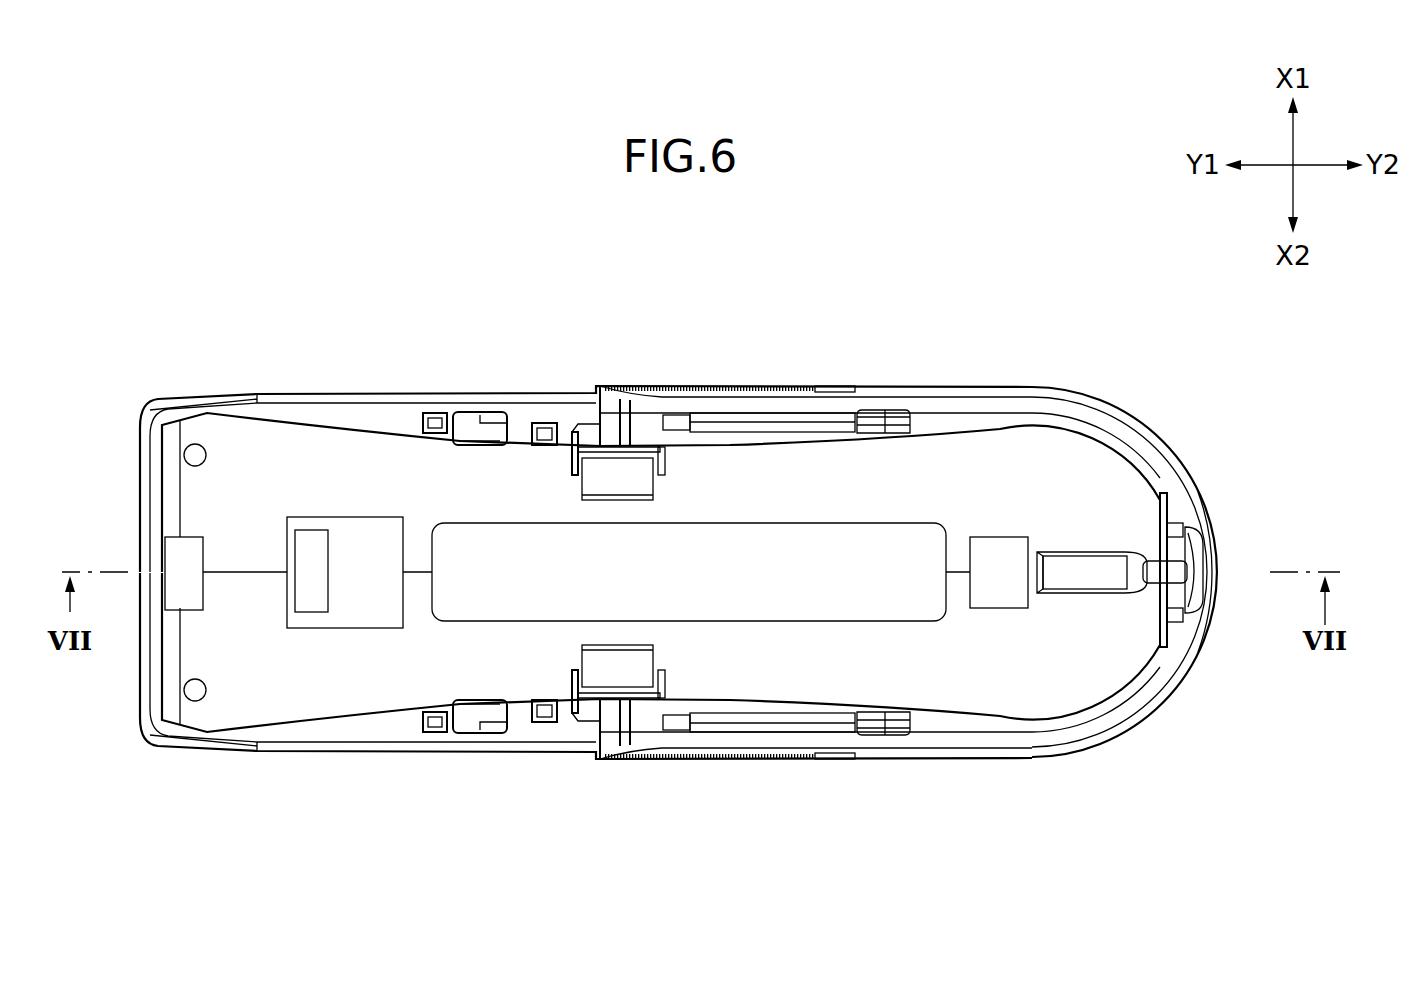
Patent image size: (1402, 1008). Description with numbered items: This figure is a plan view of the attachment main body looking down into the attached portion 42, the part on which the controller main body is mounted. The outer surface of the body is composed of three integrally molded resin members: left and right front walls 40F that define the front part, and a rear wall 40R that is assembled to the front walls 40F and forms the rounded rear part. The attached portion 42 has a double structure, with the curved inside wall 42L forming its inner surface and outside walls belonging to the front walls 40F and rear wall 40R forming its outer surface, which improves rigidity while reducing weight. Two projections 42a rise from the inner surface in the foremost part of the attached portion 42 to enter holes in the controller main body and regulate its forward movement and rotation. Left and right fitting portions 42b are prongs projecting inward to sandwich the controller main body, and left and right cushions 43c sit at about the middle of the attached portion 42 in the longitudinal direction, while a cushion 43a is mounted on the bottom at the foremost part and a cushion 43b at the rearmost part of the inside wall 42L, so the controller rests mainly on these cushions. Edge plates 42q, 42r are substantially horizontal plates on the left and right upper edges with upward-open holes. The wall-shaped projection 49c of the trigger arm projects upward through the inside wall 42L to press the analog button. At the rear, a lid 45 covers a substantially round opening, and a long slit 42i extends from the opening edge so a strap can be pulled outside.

The front wall 40F is at (475, 372).
The rear wall 40R is at (1172, 405).
The attached portion 42 is at (722, 368).
The projection 42a is at (190, 450).
The edge plate 42q is at (408, 413).
The edge plate 42r is at (767, 400).
The inside wall 42L is at (797, 470).
The fitting portion 42b is at (613, 452).
The slit 42i is at (1172, 573).
The cushion 43a is at (187, 557).
The cushion 43b is at (990, 552).
The cushion 43c is at (627, 490).
The lid 45 is at (1213, 570).
The projection 49c is at (312, 563).